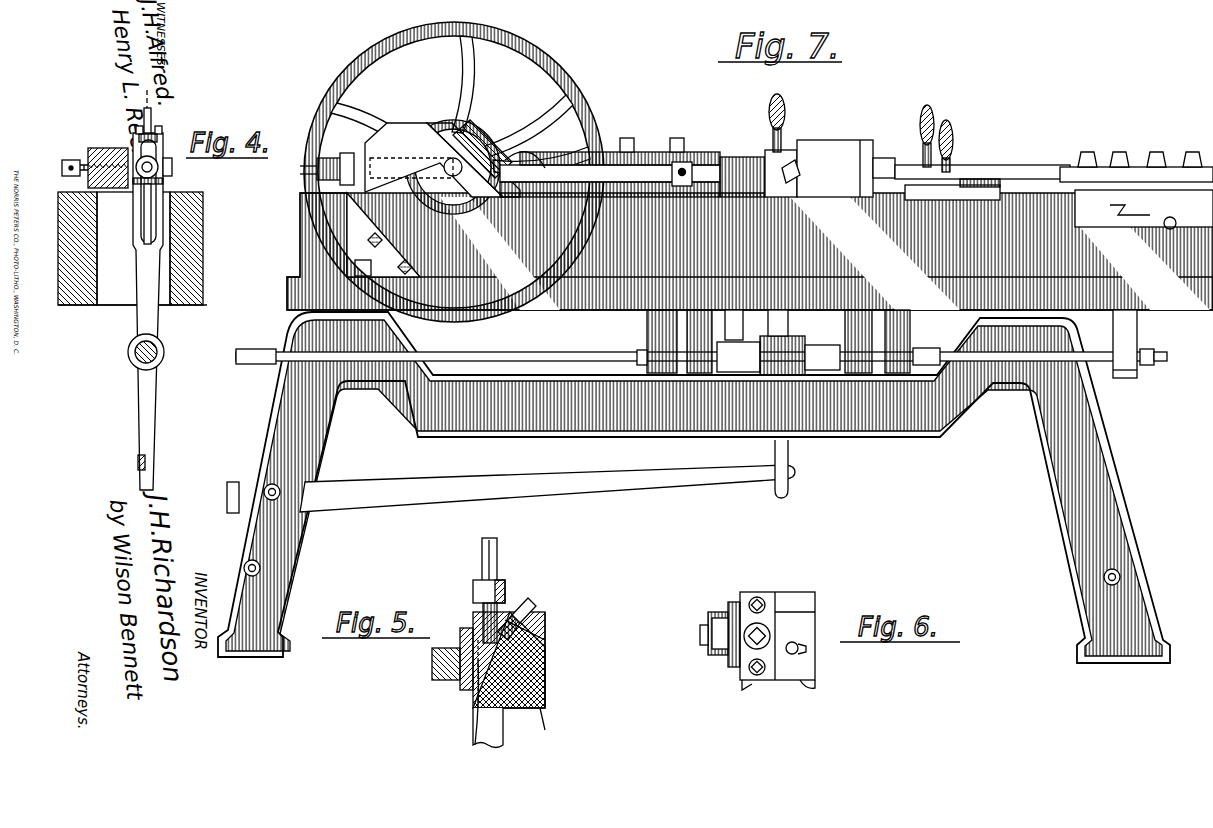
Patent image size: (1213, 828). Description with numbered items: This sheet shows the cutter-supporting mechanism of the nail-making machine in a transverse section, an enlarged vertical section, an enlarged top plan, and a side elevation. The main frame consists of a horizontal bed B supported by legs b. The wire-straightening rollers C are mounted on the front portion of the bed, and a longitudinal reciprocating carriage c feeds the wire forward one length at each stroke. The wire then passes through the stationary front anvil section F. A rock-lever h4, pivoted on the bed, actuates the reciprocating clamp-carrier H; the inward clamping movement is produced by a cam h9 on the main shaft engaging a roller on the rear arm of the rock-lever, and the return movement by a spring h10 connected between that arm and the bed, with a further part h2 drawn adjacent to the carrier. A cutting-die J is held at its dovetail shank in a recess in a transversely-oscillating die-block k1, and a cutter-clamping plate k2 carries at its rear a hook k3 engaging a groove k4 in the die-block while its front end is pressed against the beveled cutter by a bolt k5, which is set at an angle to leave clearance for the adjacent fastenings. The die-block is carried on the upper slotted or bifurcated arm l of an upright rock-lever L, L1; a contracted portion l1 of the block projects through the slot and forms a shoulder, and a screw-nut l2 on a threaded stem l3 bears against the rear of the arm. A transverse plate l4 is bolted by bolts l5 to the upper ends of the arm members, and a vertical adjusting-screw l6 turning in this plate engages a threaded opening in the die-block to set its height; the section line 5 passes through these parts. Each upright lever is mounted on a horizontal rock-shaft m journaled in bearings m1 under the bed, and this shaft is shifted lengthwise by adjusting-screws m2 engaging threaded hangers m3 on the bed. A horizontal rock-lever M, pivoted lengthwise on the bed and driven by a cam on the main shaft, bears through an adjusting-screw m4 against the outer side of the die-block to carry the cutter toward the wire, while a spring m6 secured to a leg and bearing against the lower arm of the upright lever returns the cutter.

In FIG. 7, the fly-wheel a is at (420, 30).
In FIG. 7, the shaft n is at (445, 170).
In FIG. 7, the cam h9 is at (462, 138).
In FIG. 7, the rock-lever h4 is at (492, 196).
In FIG. 7, the spring h10 is at (560, 188).
In FIG. 7, the stationary front anvil section F is at (855, 136).
In FIG. 7, the reciprocating carrier H is at (795, 150).
In FIG. 7, the pawl h2 is at (798, 174).
In FIG. 7, the wire-straightening rollers C is at (1054, 167).
In FIG. 7, the reciprocating carriage c is at (932, 200).
In FIG. 7, the bed B is at (836, 285).
In FIG. 4, the bed B is at (132, 264).
In FIG. 7, the legs b is at (694, 487).
In FIG. 7, the adjusting-screws m2 is at (505, 343).
In FIG. 7, the screw-threaded hangers m3 is at (658, 357).
In FIG. 7, the rock-shaft m is at (840, 358).
In FIG. 4, the rock-shaft m is at (140, 360).
In FIG. 7, the bearings m1 is at (712, 345).
In FIG. 7, the spring m6 is at (547, 479).
In FIG. 4, the spring m6 is at (138, 462).
In FIG. 7, the upright rock-lever L1 is at (793, 471).
In FIG. 4, the horizontal rock-lever M is at (100, 150).
In FIG. 4, the adjusting-screw m4 is at (68, 160).
In FIG. 4, the section line 5 is at (148, 160).
In FIG. 4, the slotted or bifurcated arm l is at (148, 311).
In FIG. 5, the slotted or bifurcated arm l is at (488, 737).
In FIG. 6, the slotted or bifurcated arm l is at (747, 693).
In FIG. 4, the contracted portion l1 is at (142, 186).
In FIG. 5, the contracted portion l1 is at (472, 712).
In FIG. 4, the screw-nut l2 is at (165, 180).
In FIG. 5, the screw-nut l2 is at (460, 645).
In FIG. 6, the screw-nut l2 is at (716, 614).
In FIG. 5, the screw-threaded stem l3 is at (445, 672).
In FIG. 6, the screw-threaded stem l3 is at (702, 634).
In FIG. 4, the transverse plate l4 is at (158, 140).
In FIG. 5, the transverse plate l4 is at (500, 590).
In FIG. 6, the transverse plate l4 is at (725, 668).
In FIG. 6, the bolts l5 is at (760, 596).
In FIG. 4, the vertical adjusting-screw l6 is at (151, 128).
In FIG. 5, the vertical adjusting-screw l6 is at (483, 560).
In FIG. 6, the vertical adjusting-screw l6 is at (765, 630).
In FIG. 4, the cutting-die J is at (158, 165).
In FIG. 5, the cutting-die J is at (551, 660).
In FIG. 6, the cutting-die J is at (812, 690).
In FIG. 4, the upright rock-lever L is at (136, 352).
In FIG. 5, the block K is at (540, 680).
In FIG. 5, the die-block k1 is at (540, 727).
In FIG. 5, the cutter-clamping plate k2 is at (548, 636).
In FIG. 6, the cutter-clamping plate k2 is at (808, 625).
In FIG. 5, the hook k3 is at (508, 614).
In FIG. 5, the groove k4 is at (474, 740).
In FIG. 5, the bolt k5 is at (535, 605).
In FIG. 6, the bolt k5 is at (808, 650).